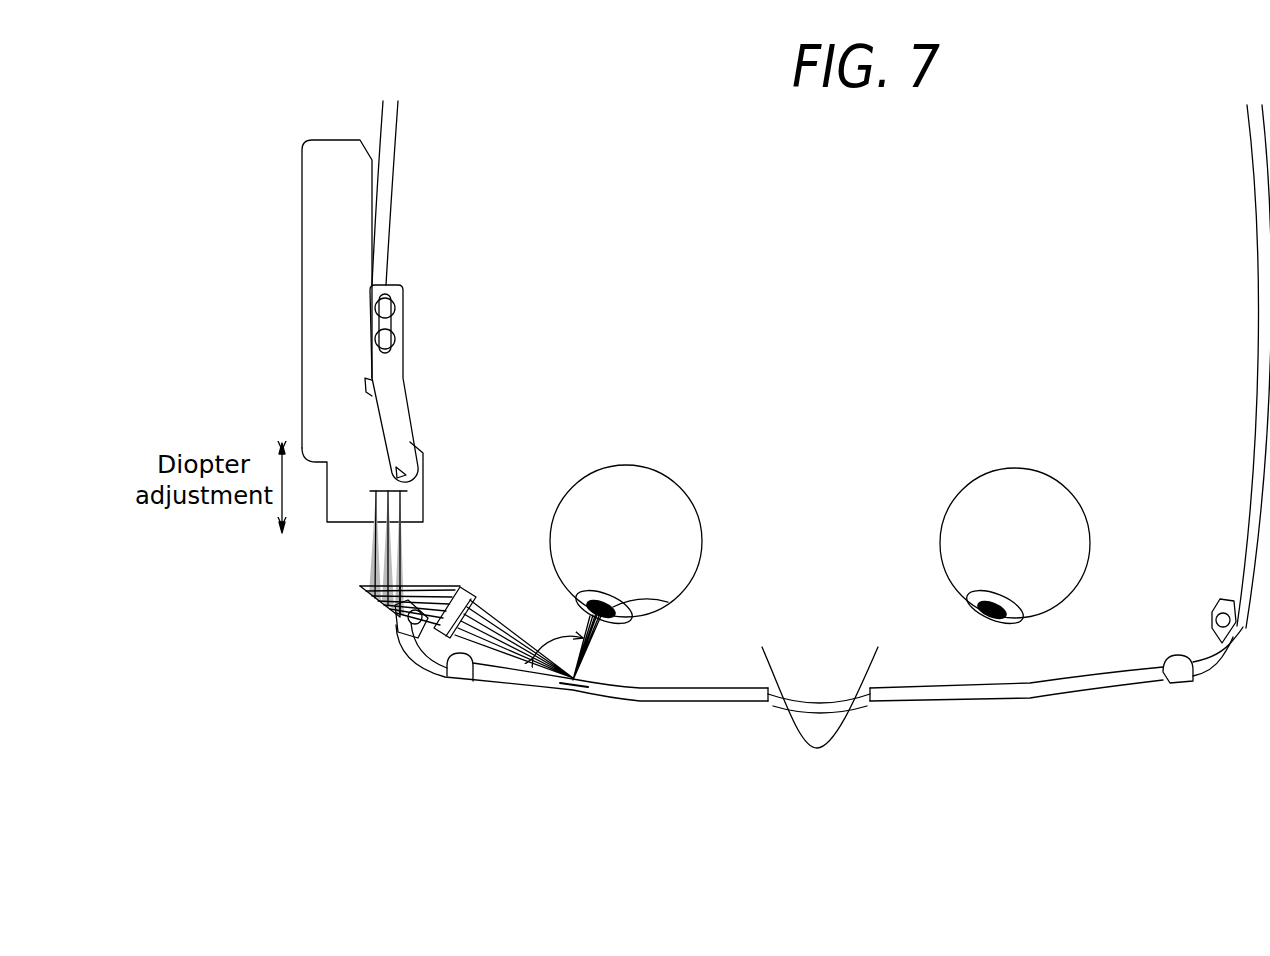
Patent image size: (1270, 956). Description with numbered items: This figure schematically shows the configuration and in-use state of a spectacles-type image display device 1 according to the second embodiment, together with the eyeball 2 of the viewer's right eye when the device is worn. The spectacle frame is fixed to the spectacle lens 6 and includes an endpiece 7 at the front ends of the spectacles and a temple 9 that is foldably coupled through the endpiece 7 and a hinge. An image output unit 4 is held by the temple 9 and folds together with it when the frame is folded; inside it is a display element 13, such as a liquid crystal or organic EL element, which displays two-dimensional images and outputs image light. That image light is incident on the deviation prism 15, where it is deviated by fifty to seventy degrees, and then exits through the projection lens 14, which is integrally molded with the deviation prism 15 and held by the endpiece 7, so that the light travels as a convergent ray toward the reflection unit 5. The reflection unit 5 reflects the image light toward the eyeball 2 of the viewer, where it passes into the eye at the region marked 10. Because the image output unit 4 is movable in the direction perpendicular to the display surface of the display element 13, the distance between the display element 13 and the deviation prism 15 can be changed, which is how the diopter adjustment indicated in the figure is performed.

The spectacles-type image display device 1 is at (488, 765).
The eyeball 2 is at (632, 482).
The image output unit 4 is at (343, 363).
The reflection unit 5 is at (574, 684).
The spectacle lens 6 is at (730, 698).
The endpiece 7 is at (404, 654).
The temple 9 is at (380, 230).
The crystalline lens 10 is at (668, 604).
The display element 13 is at (400, 492).
The projection lens 14 is at (428, 652).
The deviation prism 15 is at (382, 598).